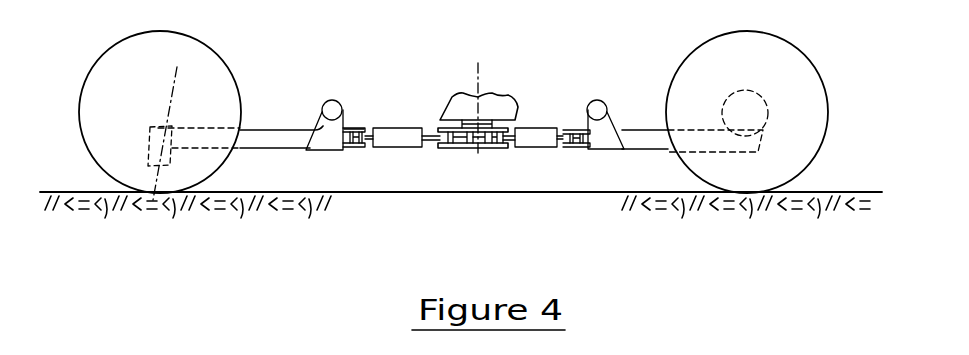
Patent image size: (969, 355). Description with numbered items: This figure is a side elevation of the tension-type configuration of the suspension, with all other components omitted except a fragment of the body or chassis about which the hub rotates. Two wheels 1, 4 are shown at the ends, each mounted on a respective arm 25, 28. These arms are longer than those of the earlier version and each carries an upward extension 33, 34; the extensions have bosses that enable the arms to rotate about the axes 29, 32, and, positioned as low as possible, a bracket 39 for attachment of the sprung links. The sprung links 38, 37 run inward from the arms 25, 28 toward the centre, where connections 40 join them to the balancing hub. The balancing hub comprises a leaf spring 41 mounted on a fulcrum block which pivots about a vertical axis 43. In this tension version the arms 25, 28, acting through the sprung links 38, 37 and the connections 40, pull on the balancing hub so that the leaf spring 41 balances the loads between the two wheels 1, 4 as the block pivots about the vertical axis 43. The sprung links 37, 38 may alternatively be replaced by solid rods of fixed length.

The wheel 1 is at (108, 63).
The wheel 4 is at (782, 50).
The arm 25 is at (263, 145).
The arm 28 is at (648, 143).
The axis 29 is at (333, 108).
The axis 32 is at (600, 108).
The upward extension 33 is at (333, 137).
The upward extension 34 is at (605, 138).
The sprung link 37 is at (540, 140).
The sprung link 38 is at (410, 140).
The bracket 39 is at (350, 130).
The connection 40 is at (457, 143).
The leaf spring 41 is at (470, 143).
The vertical axis 43 is at (478, 73).